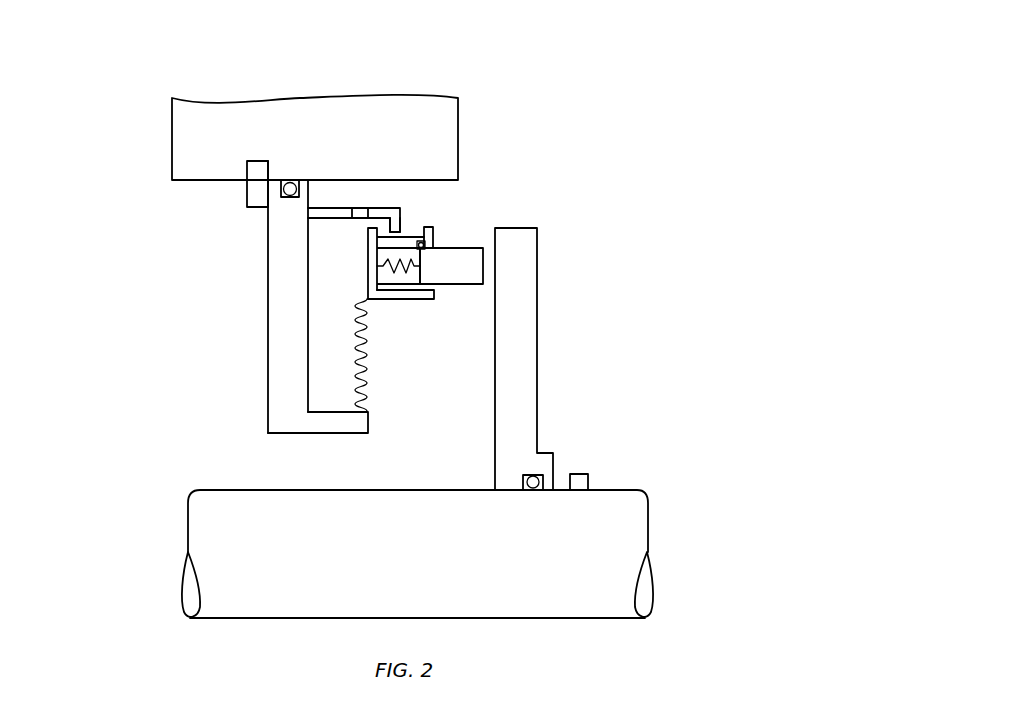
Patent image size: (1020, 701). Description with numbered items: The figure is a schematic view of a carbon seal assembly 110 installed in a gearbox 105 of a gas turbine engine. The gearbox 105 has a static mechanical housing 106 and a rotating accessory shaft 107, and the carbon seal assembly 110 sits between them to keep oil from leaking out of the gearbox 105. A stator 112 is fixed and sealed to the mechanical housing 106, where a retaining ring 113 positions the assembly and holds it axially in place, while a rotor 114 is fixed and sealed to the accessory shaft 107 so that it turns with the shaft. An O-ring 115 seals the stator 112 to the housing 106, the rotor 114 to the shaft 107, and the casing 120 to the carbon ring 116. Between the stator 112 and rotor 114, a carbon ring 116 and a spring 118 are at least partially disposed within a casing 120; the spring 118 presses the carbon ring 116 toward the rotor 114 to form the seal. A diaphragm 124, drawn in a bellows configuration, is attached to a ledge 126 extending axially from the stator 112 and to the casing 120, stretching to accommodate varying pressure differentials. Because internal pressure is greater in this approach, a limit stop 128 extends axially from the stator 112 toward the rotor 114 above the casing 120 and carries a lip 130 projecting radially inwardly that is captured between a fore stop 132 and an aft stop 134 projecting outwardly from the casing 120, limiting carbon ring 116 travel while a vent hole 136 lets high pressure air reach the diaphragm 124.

The gearbox 105 is at (586, 124).
The mechanical housing 106 is at (172, 137).
The accessory shaft 107 is at (617, 490).
The carbon seal assembly 110 is at (552, 195).
The stator 112 is at (268, 330).
The retaining ring 113 is at (247, 196).
The rotor 114 is at (538, 320).
The O-ring 115 is at (291, 196).
The carbon ring 116 is at (484, 265).
The spring 118 is at (400, 264).
The casing 120 is at (420, 300).
The diaphragm 124 is at (366, 370).
The ledge 126 is at (322, 410).
The limit stop 128 is at (383, 212).
The lip 130 is at (400, 217).
The fore stop 132 is at (367, 233).
The aft stop 134 is at (433, 236).
The vent hole 136 is at (357, 210).